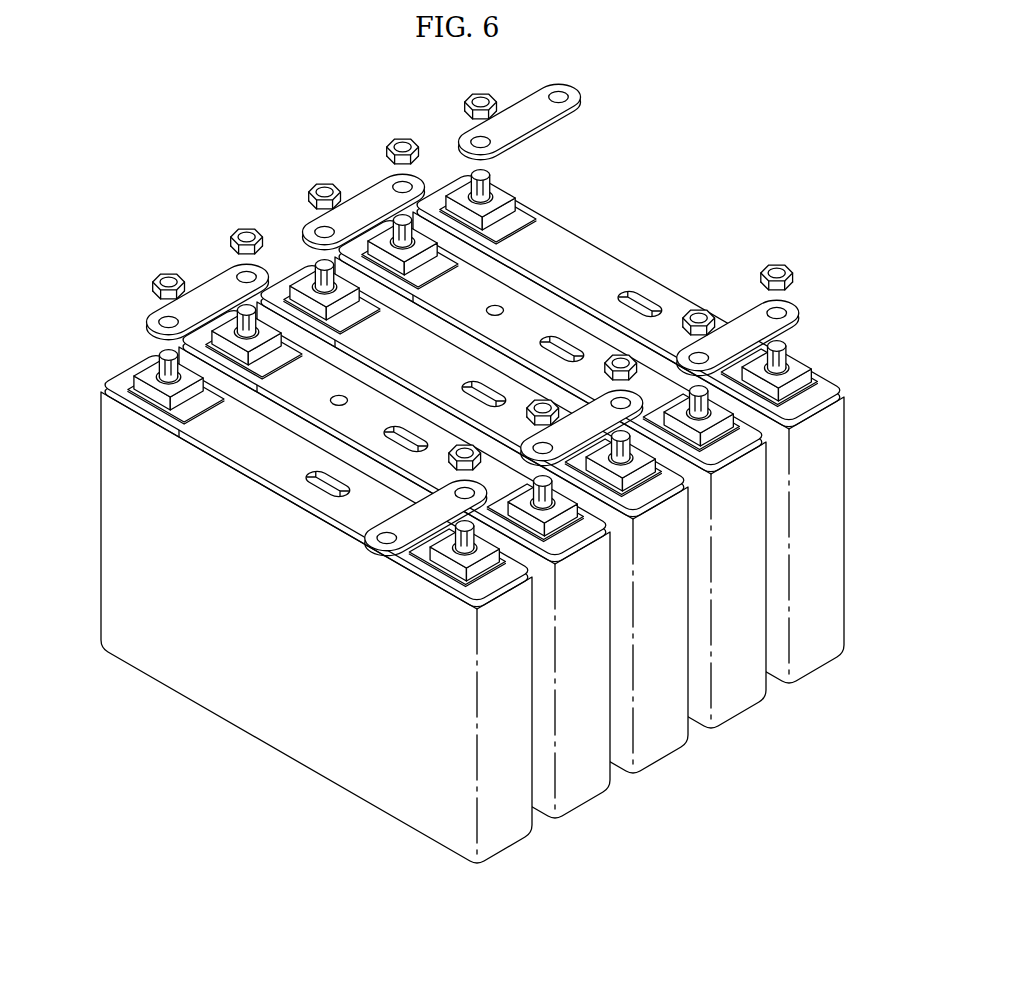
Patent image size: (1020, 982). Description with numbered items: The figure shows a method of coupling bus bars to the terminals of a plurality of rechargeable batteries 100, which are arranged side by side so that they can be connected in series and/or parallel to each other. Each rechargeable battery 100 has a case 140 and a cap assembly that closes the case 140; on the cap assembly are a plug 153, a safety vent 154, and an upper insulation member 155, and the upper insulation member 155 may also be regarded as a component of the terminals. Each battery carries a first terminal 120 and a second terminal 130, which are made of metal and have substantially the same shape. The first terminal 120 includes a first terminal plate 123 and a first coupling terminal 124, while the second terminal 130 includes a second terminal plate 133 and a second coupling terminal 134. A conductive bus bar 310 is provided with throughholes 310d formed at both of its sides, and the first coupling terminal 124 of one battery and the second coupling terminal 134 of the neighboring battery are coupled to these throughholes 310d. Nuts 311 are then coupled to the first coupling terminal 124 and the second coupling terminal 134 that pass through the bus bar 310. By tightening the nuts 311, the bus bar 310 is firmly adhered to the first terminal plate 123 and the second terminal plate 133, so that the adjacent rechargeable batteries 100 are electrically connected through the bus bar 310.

The rechargeable battery 100 is at (445, 471).
The first terminal 120 is at (289, 580).
The first terminal plate 123 is at (146, 396).
The first coupling terminal 124 is at (145, 356).
The second terminal 130 is at (304, 323).
The second terminal plate 133 is at (266, 361).
The second coupling terminal 134 is at (267, 322).
The case 140 is at (360, 780).
The plug 153 is at (350, 400).
The safety vent 154 is at (315, 492).
The upper insulation member 155 is at (210, 411).
The bus bar 310 is at (195, 269).
The throughholes 310d is at (255, 272).
The nuts 311 is at (243, 226).